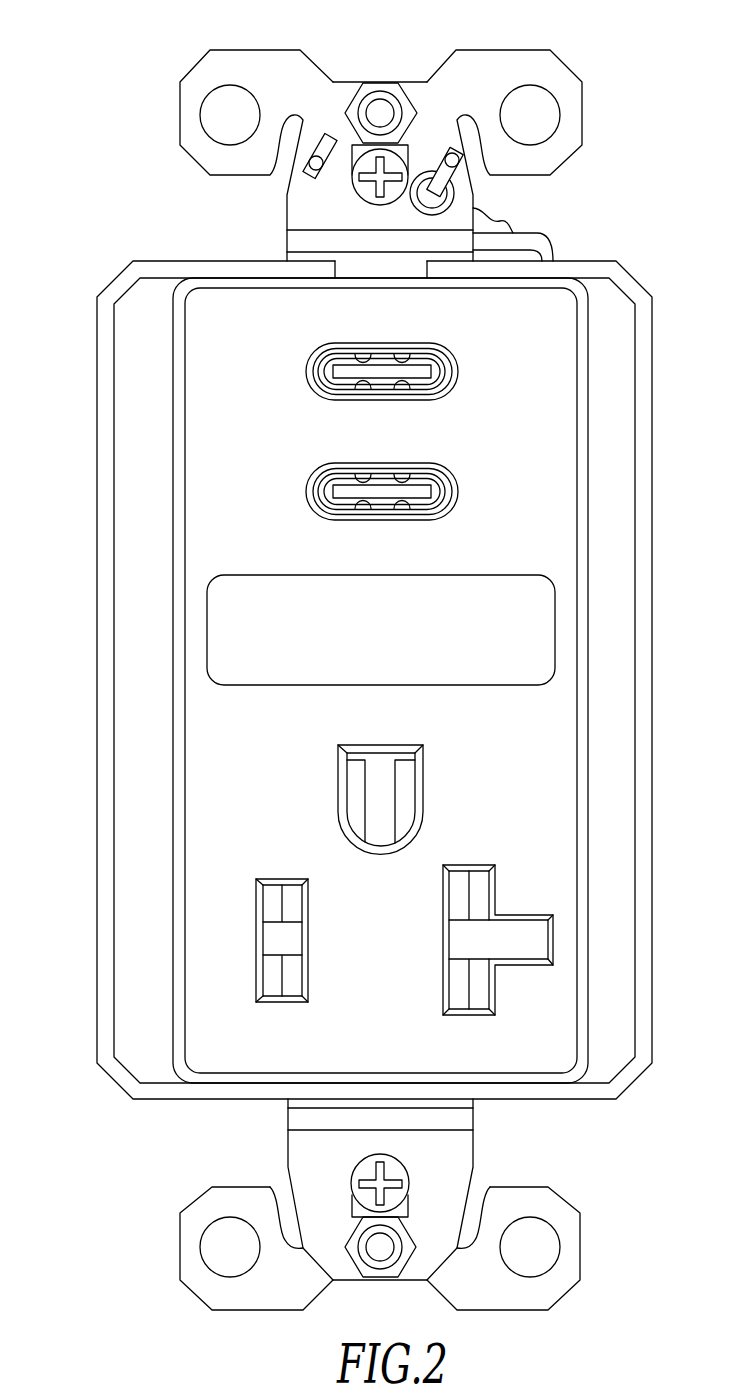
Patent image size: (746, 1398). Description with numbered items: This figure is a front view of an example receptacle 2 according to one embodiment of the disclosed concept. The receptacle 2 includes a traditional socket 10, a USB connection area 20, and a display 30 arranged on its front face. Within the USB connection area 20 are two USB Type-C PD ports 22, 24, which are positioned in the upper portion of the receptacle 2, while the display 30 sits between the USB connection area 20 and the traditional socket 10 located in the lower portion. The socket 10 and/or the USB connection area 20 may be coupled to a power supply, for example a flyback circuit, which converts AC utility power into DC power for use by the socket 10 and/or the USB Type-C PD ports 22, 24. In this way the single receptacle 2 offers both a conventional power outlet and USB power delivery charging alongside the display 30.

The receptacle 2 is at (95, 72).
The traditional socket 10 is at (280, 812).
The USB connection area 20 is at (338, 411).
The USB Type-C PD port 22 is at (380, 344).
The USB Type-C PD port 24 is at (387, 464).
The display 30 is at (325, 575).